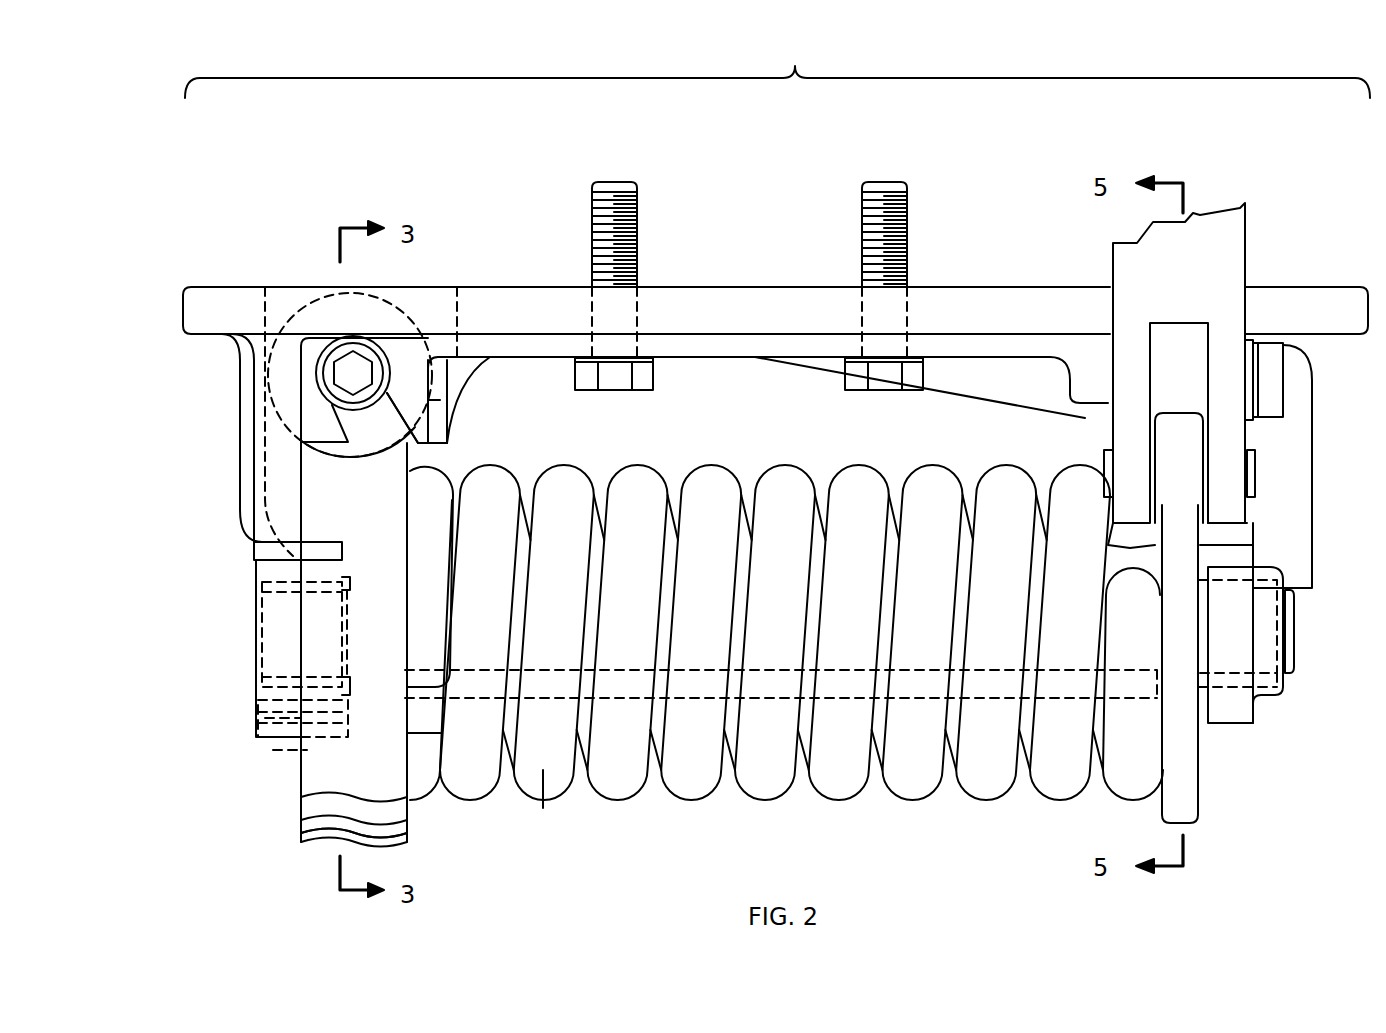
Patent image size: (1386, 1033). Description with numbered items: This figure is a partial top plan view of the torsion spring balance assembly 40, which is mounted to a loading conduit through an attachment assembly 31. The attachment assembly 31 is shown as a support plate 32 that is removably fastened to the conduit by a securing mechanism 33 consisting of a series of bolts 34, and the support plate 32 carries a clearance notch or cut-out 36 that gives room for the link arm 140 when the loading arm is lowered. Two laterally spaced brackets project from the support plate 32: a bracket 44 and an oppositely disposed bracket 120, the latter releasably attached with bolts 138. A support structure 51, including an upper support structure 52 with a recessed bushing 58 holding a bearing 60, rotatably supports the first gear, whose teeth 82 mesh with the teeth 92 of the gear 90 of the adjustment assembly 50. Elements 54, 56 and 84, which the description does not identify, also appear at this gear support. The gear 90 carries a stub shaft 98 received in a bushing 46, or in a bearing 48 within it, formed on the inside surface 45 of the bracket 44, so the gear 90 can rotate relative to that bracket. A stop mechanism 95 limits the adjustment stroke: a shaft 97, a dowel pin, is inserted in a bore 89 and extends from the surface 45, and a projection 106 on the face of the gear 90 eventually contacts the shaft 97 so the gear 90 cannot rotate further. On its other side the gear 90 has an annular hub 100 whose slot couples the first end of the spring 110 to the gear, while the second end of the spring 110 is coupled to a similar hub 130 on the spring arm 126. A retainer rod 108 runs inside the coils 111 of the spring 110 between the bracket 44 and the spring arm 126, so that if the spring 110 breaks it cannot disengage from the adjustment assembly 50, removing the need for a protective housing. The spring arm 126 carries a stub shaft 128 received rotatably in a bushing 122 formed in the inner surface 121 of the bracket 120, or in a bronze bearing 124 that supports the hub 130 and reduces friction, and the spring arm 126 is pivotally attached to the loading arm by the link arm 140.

The torsion spring balance assembly 40 is at (777, 64).
The attachment assembly 31 is at (738, 268).
The support plate 32 is at (538, 296).
The securing mechanism 33 is at (925, 182).
The bolts 34 is at (640, 210).
The clearance notch 36 is at (1252, 272).
The bracket 44 is at (252, 468).
The inside surface 45 is at (305, 705).
The bushing 46 is at (262, 600).
The bearing 48 is at (280, 588).
The adjustment assembly 50 is at (784, 613).
The support structure 51 is at (445, 405).
The upper support structure 52 is at (292, 264).
The pivot hub 54 is at (305, 390).
The cam edge 56 is at (418, 432).
The recessed bushing 58 is at (398, 345).
The bearing 60 is at (432, 378).
The teeth 82 is at (367, 452).
The pivot axis 84 is at (370, 350).
The bore 89 is at (262, 718).
The gear 90 is at (320, 795).
The teeth 92 is at (320, 845).
The stop mechanism 95 is at (270, 772).
The shaft 97 is at (280, 740).
The stub shaft 98 is at (290, 640).
The hub 100 is at (430, 775).
The projection 106 is at (285, 748).
The retainer rod 108 is at (762, 700).
The spring 110 is at (543, 812).
The coils 111 is at (684, 802).
The bracket 120 is at (1246, 540).
The inner surface 121 is at (1212, 556).
The bushing 122 is at (1288, 700).
The bearing 124 is at (1282, 690).
The spring arm 126 is at (1199, 822).
The stub shaft 128 is at (1276, 634).
The hub 130 is at (1138, 549).
The bolts 138 is at (1284, 382).
The link arm 140 is at (1240, 215).